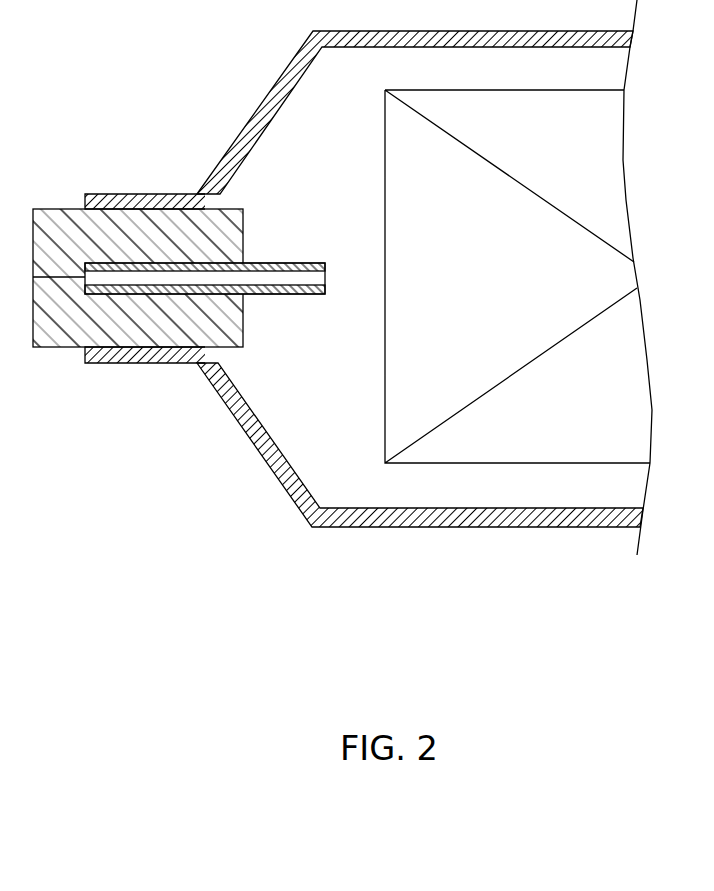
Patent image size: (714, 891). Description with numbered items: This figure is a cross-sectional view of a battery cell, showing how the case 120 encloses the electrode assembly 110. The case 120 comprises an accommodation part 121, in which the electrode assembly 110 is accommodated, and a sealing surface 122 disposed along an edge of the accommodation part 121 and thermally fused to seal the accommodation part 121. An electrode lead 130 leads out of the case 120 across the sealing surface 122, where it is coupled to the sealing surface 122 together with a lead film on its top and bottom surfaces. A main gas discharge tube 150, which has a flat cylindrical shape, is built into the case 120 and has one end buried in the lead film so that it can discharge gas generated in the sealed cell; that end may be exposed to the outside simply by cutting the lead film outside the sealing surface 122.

The electrode assembly 110 is at (612, 160).
The case 120 is at (364, 340).
The accommodation part 121 is at (213, 603).
The sealing surface 122 is at (147, 364).
The electrode lead 130 is at (45, 348).
The main gas discharge tube 150 is at (288, 262).